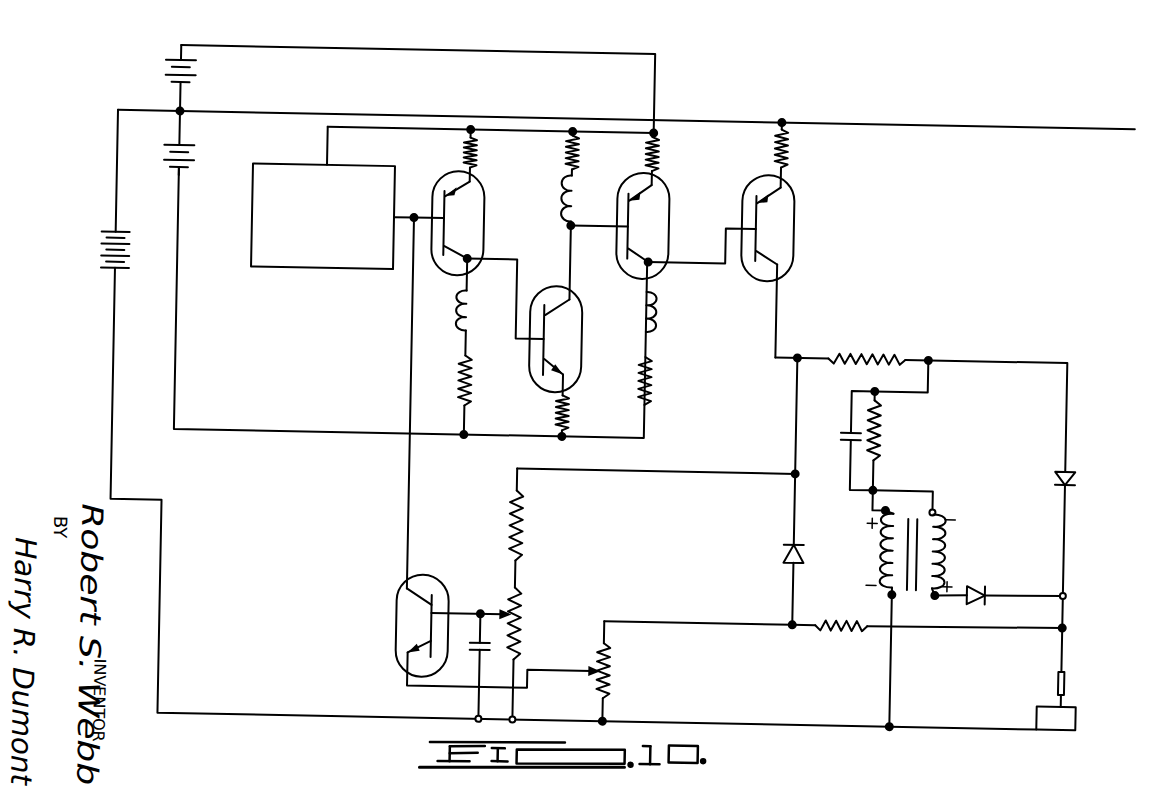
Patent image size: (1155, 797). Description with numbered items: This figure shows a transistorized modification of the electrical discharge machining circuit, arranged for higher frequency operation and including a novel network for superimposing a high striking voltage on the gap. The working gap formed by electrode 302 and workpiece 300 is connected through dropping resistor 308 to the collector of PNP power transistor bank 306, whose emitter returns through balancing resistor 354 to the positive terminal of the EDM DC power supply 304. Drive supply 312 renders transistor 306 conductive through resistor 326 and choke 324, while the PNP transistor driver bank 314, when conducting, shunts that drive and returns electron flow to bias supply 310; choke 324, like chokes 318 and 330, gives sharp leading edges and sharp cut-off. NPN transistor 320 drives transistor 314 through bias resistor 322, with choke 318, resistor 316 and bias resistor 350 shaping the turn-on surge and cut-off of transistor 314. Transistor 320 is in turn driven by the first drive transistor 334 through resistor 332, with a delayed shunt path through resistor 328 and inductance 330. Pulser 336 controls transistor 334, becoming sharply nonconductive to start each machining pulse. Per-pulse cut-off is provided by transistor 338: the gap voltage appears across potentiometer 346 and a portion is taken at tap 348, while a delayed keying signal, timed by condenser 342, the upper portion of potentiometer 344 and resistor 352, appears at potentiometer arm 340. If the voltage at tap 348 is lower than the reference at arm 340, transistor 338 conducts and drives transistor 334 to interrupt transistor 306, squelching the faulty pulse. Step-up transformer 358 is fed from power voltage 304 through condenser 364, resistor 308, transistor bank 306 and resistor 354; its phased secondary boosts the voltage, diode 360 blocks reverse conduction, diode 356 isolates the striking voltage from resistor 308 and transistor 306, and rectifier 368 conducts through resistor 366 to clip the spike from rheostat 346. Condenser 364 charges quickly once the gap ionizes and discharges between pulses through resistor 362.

The workpiece 300 is at (1077, 704).
The electrode 302 is at (1079, 663).
The EDM DC power supply 304 is at (104, 244).
The power transistor bank 306 is at (780, 214).
The dropping resistor 308 is at (868, 340).
The bias supply 310 is at (187, 75).
The drive voltage supply 312 is at (189, 158).
The transistor driver bank 314 is at (674, 211).
The resistor 316 is at (580, 147).
The choke 318 is at (594, 180).
The NPN transistor 320 is at (584, 332).
The bias resistor 322 is at (573, 413).
The choke 324 is at (661, 301).
The resistor 326 is at (661, 371).
The resistor 328 is at (475, 380).
The choke 330 is at (473, 318).
The resistor 332 is at (480, 151).
The first drive transistor 334 is at (472, 209).
The pulser 336 is at (342, 239).
The cut-off transistor 338 is at (405, 611).
The potentiometer arm 340 is at (519, 604).
The condenser 342 is at (478, 646).
The potentiometer 344 is at (536, 618).
The potentiometer (rheostat) 346 is at (627, 672).
The potentiometer arm 348 is at (607, 661).
The bias resistor 350 is at (662, 151).
The resistor 352 is at (538, 493).
The balancing resistor 354 is at (792, 148).
The diode 356 is at (1082, 453).
The step-up transformer 358 is at (918, 497).
The diode 360 is at (984, 565).
The resistor 362 is at (887, 417).
The condenser 364 is at (848, 424).
The resistor 366 is at (846, 620).
The rectifier 368 is at (793, 541).